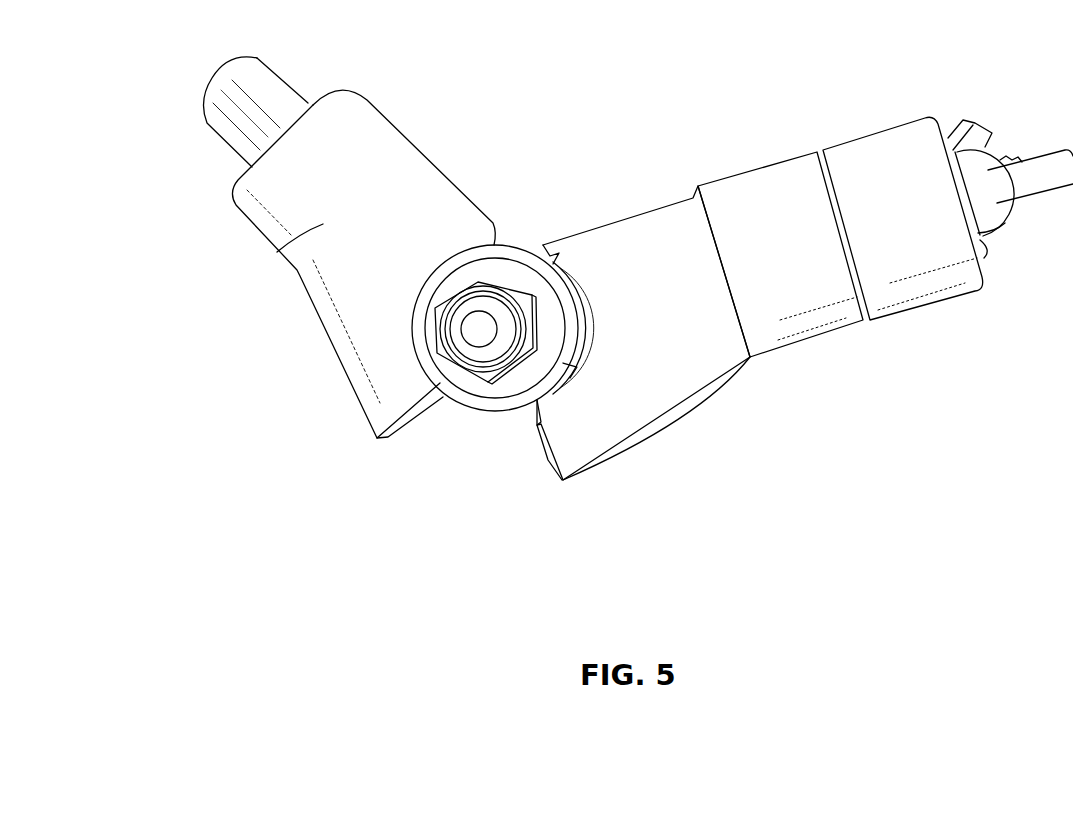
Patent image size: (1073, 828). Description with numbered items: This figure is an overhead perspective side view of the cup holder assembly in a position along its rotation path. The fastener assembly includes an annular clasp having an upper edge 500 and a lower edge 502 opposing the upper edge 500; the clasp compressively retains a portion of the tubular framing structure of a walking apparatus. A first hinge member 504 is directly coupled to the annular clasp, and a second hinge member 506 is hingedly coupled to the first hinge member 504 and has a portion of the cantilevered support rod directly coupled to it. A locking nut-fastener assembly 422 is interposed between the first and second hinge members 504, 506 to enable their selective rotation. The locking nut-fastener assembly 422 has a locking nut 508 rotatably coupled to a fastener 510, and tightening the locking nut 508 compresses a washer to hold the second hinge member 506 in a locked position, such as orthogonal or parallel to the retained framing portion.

The upper edge 500 is at (857, 324).
The lower edge 502 is at (750, 172).
The first hinge member 504 is at (693, 367).
The second hinge member 506 is at (282, 252).
The locking nut 508 is at (480, 282).
The fastener 510 is at (482, 335).
The locking nut-fastener assembly 422 is at (489, 276).